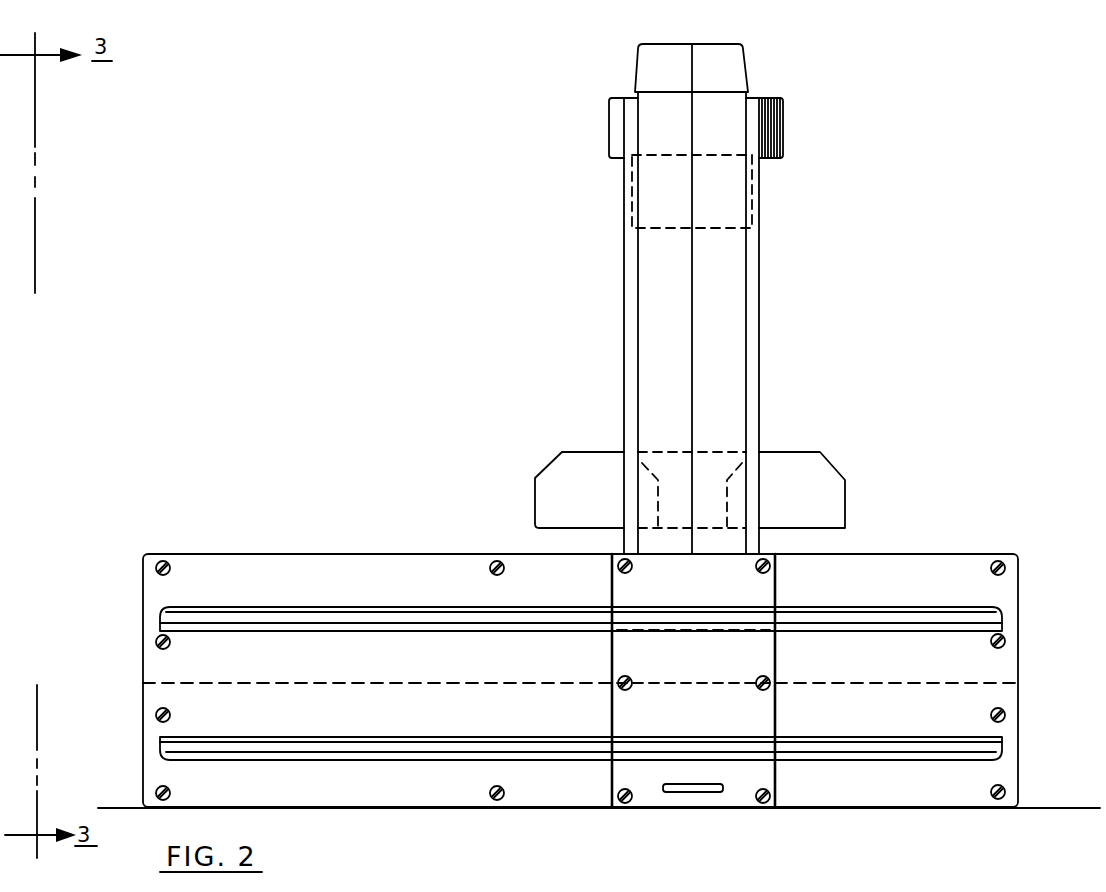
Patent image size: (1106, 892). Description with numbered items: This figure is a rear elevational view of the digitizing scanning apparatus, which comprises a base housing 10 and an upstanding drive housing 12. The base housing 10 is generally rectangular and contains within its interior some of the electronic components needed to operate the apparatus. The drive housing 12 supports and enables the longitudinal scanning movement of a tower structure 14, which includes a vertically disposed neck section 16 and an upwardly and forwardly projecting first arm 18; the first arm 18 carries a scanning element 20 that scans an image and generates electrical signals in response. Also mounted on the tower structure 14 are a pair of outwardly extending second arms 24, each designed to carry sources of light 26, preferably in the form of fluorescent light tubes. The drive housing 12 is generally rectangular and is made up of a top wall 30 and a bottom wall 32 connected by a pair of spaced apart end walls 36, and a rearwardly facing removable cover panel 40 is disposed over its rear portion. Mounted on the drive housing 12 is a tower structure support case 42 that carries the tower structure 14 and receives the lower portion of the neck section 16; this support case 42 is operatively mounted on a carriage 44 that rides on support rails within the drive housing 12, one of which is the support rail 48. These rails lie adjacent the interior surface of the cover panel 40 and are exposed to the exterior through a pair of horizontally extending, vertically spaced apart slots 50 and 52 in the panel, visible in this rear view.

The base housing 10 is at (177, 683).
The drive housing 12 is at (238, 546).
The tower structure 14 is at (828, 244).
The neck section 16 is at (665, 268).
The first arm 18 is at (612, 117).
The scanning element 20 is at (725, 68).
The second arms 24 is at (812, 440).
The sources of light 26 is at (573, 483).
The top wall 30 is at (385, 555).
The bottom wall 32 is at (848, 808).
The end walls 36 is at (143, 705).
The removable cover panel 40 is at (386, 788).
The tower structure support case 42 is at (762, 652).
The carriage 44 is at (287, 625).
The support rail 48 is at (495, 748).
The slot 50 is at (430, 632).
The slot 52 is at (327, 760).